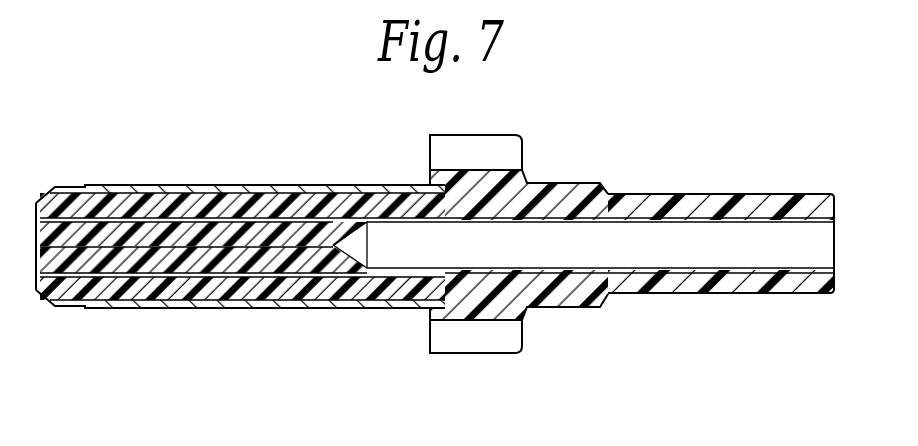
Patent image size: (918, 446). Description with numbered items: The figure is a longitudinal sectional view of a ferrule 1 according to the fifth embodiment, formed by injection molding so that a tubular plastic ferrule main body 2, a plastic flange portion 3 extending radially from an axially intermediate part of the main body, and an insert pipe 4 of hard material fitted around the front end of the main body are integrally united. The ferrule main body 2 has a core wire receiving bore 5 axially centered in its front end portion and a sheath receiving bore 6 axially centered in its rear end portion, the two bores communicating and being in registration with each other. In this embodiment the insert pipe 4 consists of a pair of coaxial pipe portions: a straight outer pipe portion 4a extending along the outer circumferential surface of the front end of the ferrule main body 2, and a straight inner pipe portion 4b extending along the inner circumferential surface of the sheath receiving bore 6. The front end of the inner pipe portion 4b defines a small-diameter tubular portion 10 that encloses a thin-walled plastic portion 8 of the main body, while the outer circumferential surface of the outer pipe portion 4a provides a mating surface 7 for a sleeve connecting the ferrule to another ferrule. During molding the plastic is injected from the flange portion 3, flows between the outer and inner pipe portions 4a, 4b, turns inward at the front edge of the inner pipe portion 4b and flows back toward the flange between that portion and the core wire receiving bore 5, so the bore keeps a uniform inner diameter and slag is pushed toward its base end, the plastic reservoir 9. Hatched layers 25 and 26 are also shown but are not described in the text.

The ferrule 1 is at (562, 144).
The ferrule main body 2 is at (676, 298).
The flange portion 3 is at (508, 322).
The insert pipe 4 is at (298, 118).
The outer pipe portion 4a is at (212, 185).
The inner pipe portion 4b is at (259, 230).
The core wire receiving bore 5 is at (300, 250).
The sheath receiving bore 6 is at (685, 222).
The mating surface 7 is at (305, 185).
The thin-walled plastic portion 8 is at (74, 258).
The plastic reservoir 9 is at (337, 273).
The small-diameter tubular portion 10 is at (56, 276).
The outer sheath layer 25 is at (133, 190).
The intermediate layer 26 is at (190, 278).